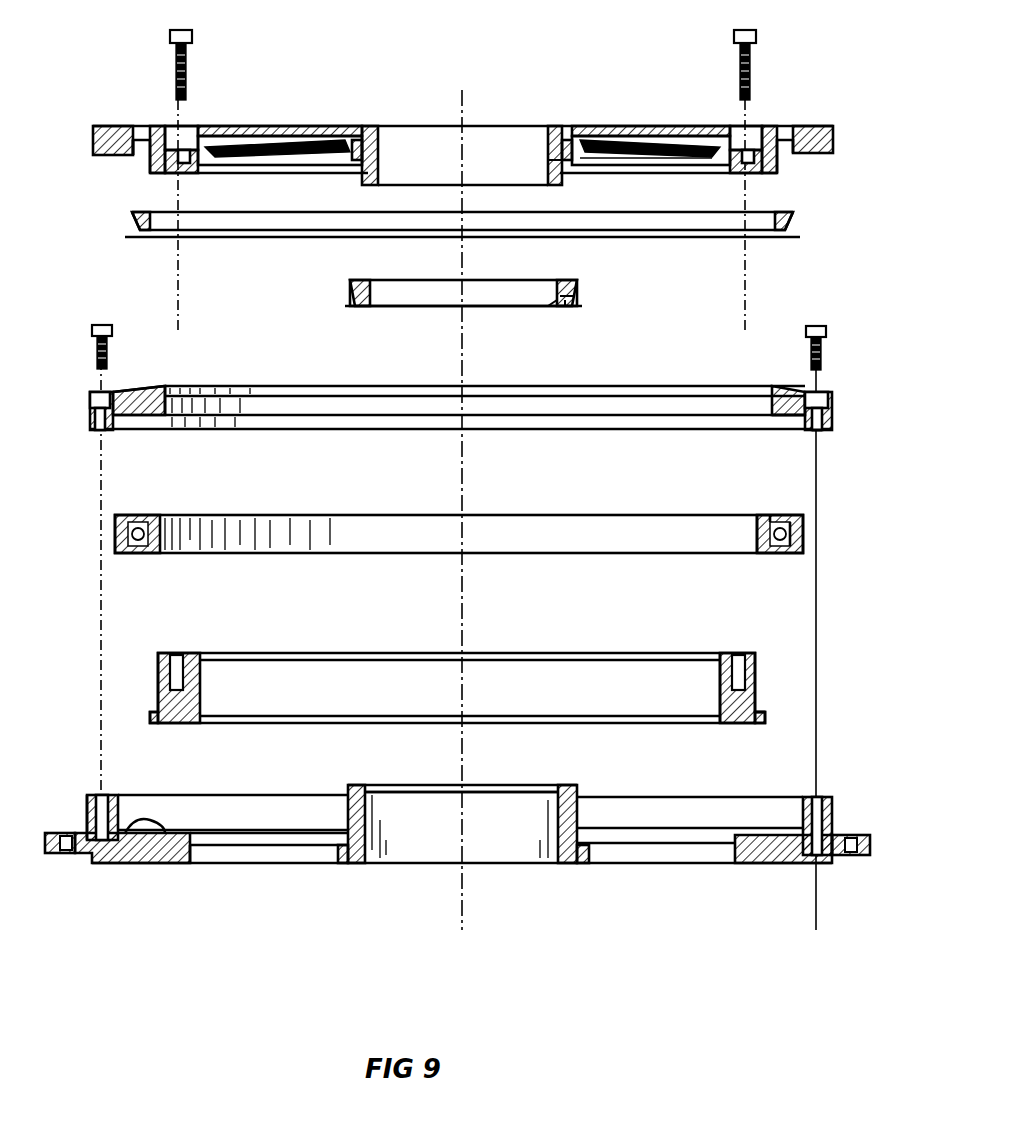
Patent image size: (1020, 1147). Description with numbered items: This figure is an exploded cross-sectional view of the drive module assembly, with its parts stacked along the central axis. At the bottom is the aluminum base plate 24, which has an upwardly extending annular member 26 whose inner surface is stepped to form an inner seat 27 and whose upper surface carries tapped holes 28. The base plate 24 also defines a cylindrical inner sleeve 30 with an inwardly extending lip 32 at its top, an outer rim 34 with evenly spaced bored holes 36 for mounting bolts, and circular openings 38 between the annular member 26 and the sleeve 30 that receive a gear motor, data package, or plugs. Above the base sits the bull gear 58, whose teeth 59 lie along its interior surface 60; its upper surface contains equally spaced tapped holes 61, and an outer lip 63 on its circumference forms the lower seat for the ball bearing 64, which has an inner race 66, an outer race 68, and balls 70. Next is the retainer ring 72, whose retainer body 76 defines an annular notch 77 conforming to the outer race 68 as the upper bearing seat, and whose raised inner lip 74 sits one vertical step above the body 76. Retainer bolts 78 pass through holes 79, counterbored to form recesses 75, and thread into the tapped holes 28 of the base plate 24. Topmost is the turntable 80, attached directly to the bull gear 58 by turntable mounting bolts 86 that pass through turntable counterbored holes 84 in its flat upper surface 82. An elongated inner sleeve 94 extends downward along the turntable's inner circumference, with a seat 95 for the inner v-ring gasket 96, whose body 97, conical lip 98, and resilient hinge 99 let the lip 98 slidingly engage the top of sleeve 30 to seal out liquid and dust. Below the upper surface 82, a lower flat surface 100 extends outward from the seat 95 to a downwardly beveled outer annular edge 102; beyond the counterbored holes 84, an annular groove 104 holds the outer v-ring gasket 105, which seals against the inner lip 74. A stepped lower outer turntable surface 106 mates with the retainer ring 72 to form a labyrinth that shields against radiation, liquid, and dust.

The base plate 24 is at (785, 866).
The annular member 26 is at (88, 812).
The inner seat 27 is at (168, 866).
The tapped holes 28 is at (105, 797).
The cylindrical inner sleeve 30 is at (370, 832).
The inwardly extending lip 32 is at (375, 787).
The outer rim 34 is at (50, 856).
The bored holes 36 is at (68, 856).
The circular openings 38 is at (298, 866).
The bull gear 58 is at (172, 725).
The teeth of the gear 59 is at (722, 688).
The interior surface 60 is at (516, 697).
The tapped holes 61 is at (748, 653).
The outer lip 63 is at (760, 712).
The ball bearing 64 is at (800, 492).
The inner race 66 is at (760, 555).
The outer race 68 is at (806, 545).
The balls 70 is at (800, 535).
The retainer ring 72 is at (712, 370).
The inner lip 74 is at (122, 395).
The recesses 75 is at (830, 400).
The retainer body 76 is at (790, 431).
The annular notch 77 is at (112, 432).
The retainer bolts 78 is at (828, 332).
The holes 79 is at (820, 432).
The turntable 80 is at (640, 110).
The flat upper surface 82 is at (345, 100).
The turntable counterbored holes 84 is at (758, 130).
The turntable mounting bolts 86 is at (756, 50).
The elongated inner sleeve 94 is at (552, 150).
The seat 95 is at (555, 165).
The inner v-ring gasket 96 is at (580, 285).
The body 97 is at (553, 305).
The conical lip 98 is at (568, 308).
The resilient hinge 99 is at (578, 300).
The lower flat surface 100 is at (695, 160).
The outer annular edge 102 is at (712, 108).
The annular groove 104 is at (785, 142).
The outer v-ring gasket 105 is at (795, 222).
The lower outer turntable surface 106 is at (130, 150).